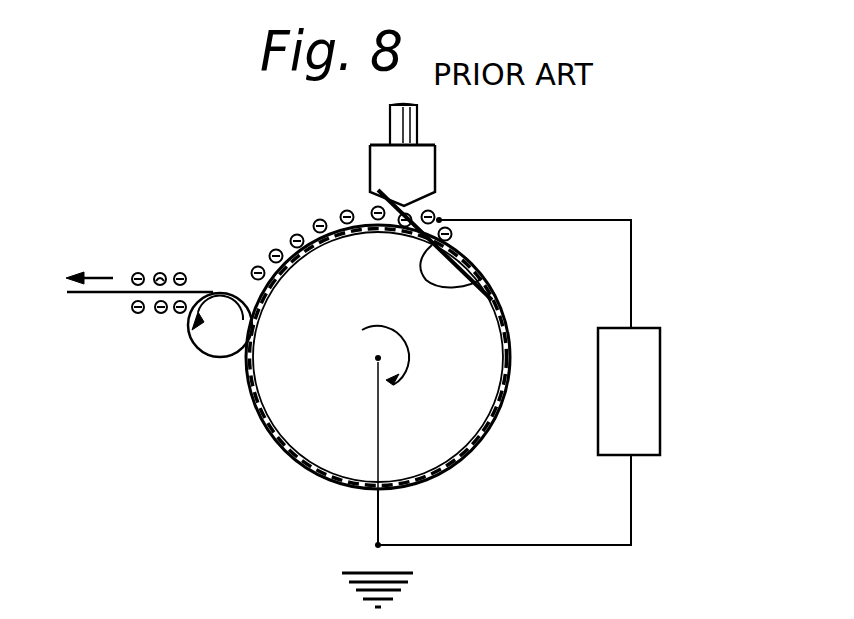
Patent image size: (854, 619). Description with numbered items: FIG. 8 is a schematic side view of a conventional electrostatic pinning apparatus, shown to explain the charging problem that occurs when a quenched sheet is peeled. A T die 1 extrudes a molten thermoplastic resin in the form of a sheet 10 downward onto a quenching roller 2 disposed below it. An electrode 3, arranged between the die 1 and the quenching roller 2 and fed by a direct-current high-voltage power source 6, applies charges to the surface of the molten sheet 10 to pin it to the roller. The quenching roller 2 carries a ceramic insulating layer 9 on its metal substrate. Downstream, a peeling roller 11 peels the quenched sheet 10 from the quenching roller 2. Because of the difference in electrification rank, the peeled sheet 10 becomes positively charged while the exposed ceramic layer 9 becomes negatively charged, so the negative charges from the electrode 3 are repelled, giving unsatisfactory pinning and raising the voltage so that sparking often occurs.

The T die 1 is at (370, 161).
The quenching roller 2 is at (489, 436).
The electrode 3 is at (439, 220).
The direct-current high-voltage power source 6 is at (661, 408).
The insulating layer 9 is at (262, 410).
The sheet 10 is at (70, 294).
The peeling roller 11 is at (191, 333).